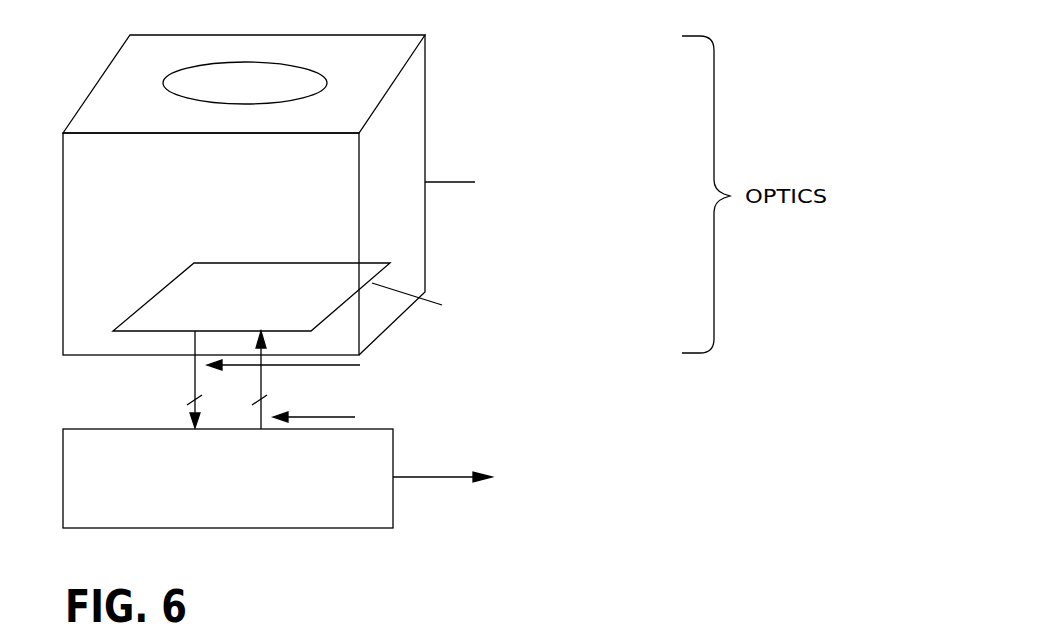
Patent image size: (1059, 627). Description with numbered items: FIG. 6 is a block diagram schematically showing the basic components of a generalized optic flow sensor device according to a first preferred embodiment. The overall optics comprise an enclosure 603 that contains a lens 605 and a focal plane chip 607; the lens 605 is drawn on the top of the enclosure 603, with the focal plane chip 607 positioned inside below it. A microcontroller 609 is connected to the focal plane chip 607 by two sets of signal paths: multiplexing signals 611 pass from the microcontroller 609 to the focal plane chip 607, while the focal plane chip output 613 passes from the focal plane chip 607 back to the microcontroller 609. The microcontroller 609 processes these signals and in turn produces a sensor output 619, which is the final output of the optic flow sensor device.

The enclosure 603 is at (345, 195).
The lens 605 is at (273, 72).
The focal plane chip 607 is at (387, 284).
The microcontroller 609 is at (228, 500).
The multiplexing signals 611 is at (433, 380).
The focal plane chip output 613 is at (388, 379).
The sensor output 619 is at (542, 497).